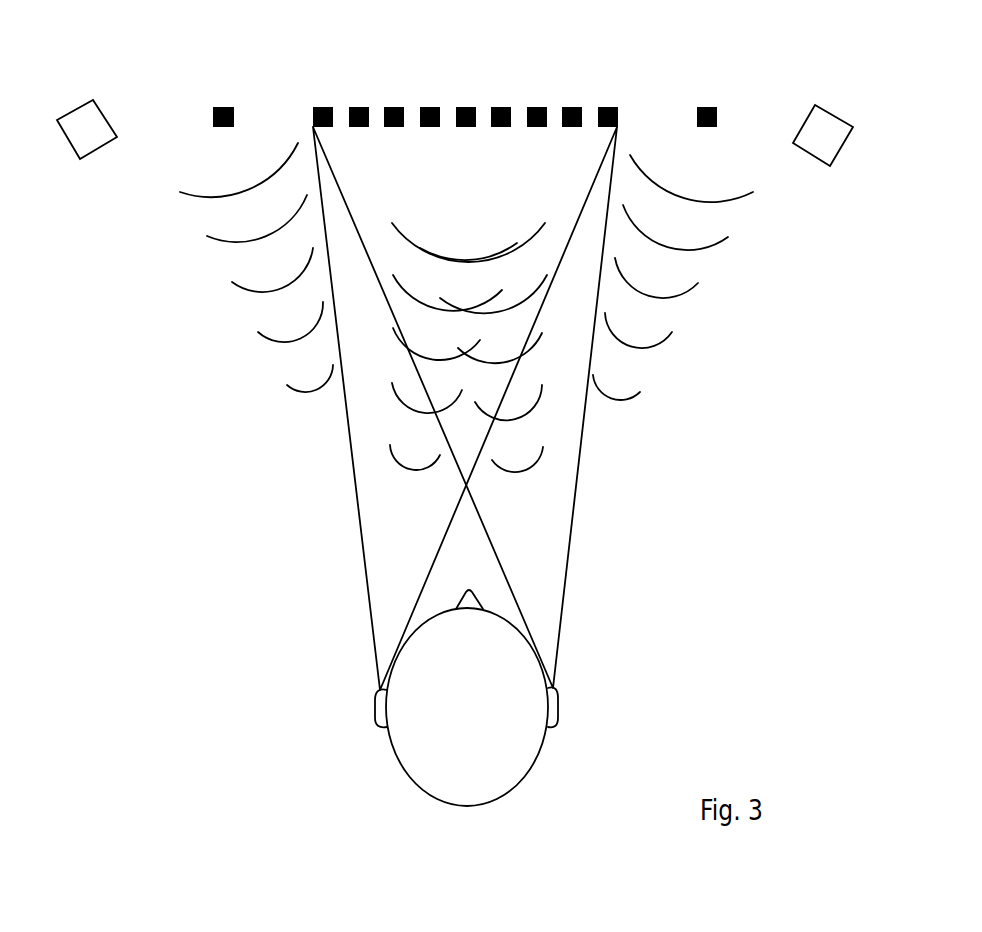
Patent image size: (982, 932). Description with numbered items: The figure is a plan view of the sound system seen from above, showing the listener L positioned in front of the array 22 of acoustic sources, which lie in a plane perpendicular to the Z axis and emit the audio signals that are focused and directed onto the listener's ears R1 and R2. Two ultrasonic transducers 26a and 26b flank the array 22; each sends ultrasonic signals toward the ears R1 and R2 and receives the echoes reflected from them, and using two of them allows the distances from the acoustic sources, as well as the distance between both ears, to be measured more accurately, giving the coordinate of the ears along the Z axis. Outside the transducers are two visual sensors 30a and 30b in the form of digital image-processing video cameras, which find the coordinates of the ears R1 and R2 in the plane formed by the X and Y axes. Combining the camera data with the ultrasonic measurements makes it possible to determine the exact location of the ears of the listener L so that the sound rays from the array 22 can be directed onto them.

The array of acoustic sources 22 is at (466, 90).
The ultrasonic transducer 26a is at (700, 107).
The second ultrasonic transducer 26b is at (215, 107).
The visual sensor 30a is at (823, 127).
The visual sensor 30b is at (92, 127).
The listener L is at (432, 735).
The listener's ear R1 is at (560, 700).
The listener's ear R2 is at (375, 698).